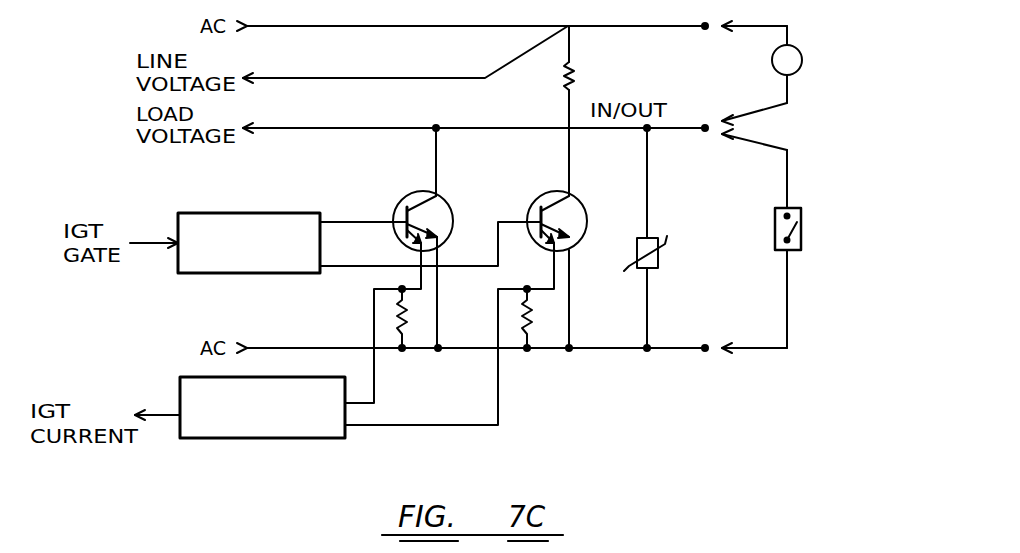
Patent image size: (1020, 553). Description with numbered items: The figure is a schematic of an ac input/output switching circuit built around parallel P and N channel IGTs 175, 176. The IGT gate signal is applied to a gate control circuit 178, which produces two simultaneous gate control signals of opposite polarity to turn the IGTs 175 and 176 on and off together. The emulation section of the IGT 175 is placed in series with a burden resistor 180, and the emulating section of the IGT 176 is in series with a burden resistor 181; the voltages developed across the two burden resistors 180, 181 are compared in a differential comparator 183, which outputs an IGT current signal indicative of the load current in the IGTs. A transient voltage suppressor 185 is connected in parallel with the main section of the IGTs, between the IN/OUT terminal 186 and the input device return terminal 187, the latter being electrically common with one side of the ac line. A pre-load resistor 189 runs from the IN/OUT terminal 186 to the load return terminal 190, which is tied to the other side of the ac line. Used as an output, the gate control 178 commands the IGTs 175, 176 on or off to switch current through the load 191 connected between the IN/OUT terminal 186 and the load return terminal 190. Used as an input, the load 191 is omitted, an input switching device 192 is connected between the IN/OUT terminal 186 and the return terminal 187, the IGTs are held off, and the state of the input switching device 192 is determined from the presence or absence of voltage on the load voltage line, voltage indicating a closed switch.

The P channel IGT 175 is at (572, 199).
The N channel IGT 176 is at (440, 199).
The gate control circuit 178 is at (228, 213).
The burden resistor 180 is at (530, 320).
The burden resistor 181 is at (405, 320).
The differential comparator 183 is at (243, 440).
The transient voltage suppressor 185 is at (655, 270).
The IN/OUT terminal 186 is at (706, 140).
The input device return terminal 187 is at (705, 353).
The pre-load resistor 189 is at (573, 66).
The load return terminal 190 is at (704, 31).
The load 191 is at (794, 73).
The input switching device 192 is at (790, 252).